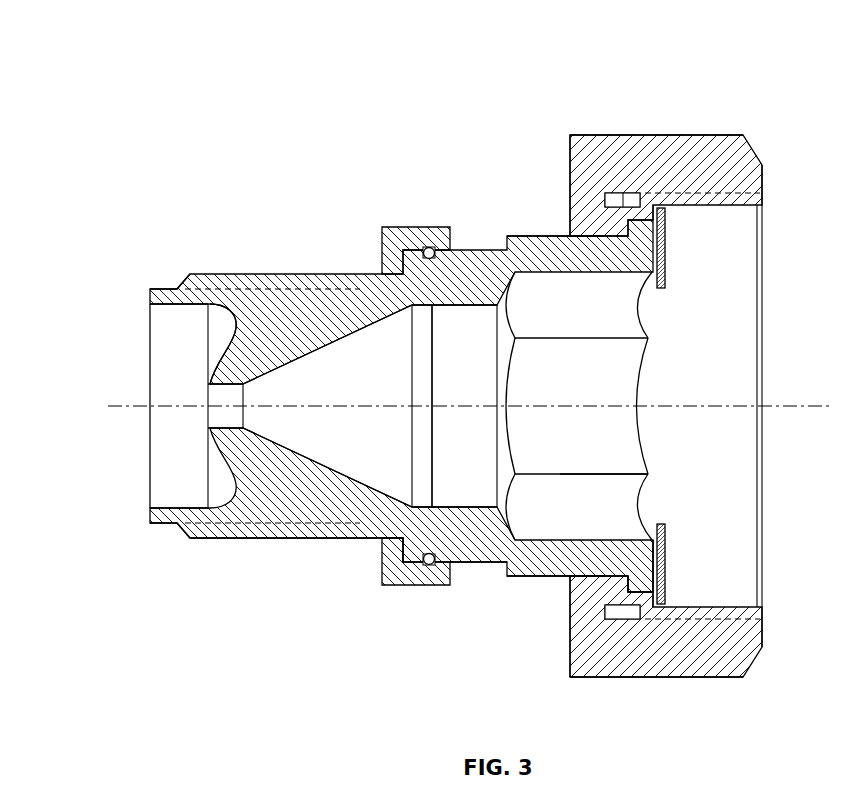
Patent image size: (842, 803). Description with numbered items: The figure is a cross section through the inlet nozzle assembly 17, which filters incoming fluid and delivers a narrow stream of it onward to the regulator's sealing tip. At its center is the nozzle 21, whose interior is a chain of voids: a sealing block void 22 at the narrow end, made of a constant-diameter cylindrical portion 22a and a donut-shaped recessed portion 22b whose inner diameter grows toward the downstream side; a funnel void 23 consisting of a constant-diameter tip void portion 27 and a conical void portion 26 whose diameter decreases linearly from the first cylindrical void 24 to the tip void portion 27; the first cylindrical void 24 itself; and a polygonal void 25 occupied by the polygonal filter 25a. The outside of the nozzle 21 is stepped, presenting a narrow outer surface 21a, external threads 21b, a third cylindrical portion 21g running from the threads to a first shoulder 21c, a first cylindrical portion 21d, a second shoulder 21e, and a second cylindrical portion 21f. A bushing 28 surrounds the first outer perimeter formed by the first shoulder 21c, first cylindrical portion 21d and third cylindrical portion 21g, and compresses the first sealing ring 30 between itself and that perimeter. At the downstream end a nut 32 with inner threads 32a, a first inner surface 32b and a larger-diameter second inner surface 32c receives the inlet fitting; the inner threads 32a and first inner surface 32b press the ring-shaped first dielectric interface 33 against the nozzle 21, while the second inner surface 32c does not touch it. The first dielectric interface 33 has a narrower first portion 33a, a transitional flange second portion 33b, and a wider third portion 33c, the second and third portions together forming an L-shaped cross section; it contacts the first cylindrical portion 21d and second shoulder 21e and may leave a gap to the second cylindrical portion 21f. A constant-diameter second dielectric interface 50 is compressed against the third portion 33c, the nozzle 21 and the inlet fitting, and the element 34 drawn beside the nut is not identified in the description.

The inlet nozzle assembly 17 is at (754, 96).
The nozzle 21 is at (478, 248).
The narrow outer surface 21a is at (170, 289).
The external threads 21b is at (265, 540).
The first shoulder 21c is at (477, 472).
The first cylindrical portion 21d is at (478, 565).
The second shoulder 21e is at (636, 574).
The second cylindrical portion 21f is at (645, 606).
The third cylindrical portion 21g is at (367, 540).
The sealing block void 22 is at (170, 473).
The cylindrical portion 22a is at (158, 350).
The recessed portion 22b is at (222, 318).
The funnel void 23 is at (266, 392).
The first cylindrical void 24 is at (451, 389).
The polygonal void 25 is at (558, 449).
The polygonal filter 25a is at (577, 476).
The conical void portion 26 is at (360, 383).
The tip void portion 27 is at (223, 413).
The bushing 28 is at (397, 227).
The first sealing ring 30 is at (429, 247).
The nut 32 is at (591, 132).
The inner threads 32a is at (748, 207).
The first inner surface 32b is at (580, 222).
The second inner surface 32c is at (637, 203).
The first dielectric interface 33 is at (553, 234).
The first portion 33a is at (547, 237).
The second portion 33b is at (623, 198).
The third portion 33c is at (667, 208).
The pipe 34 is at (762, 515).
The second dielectric interface 50 is at (666, 222).